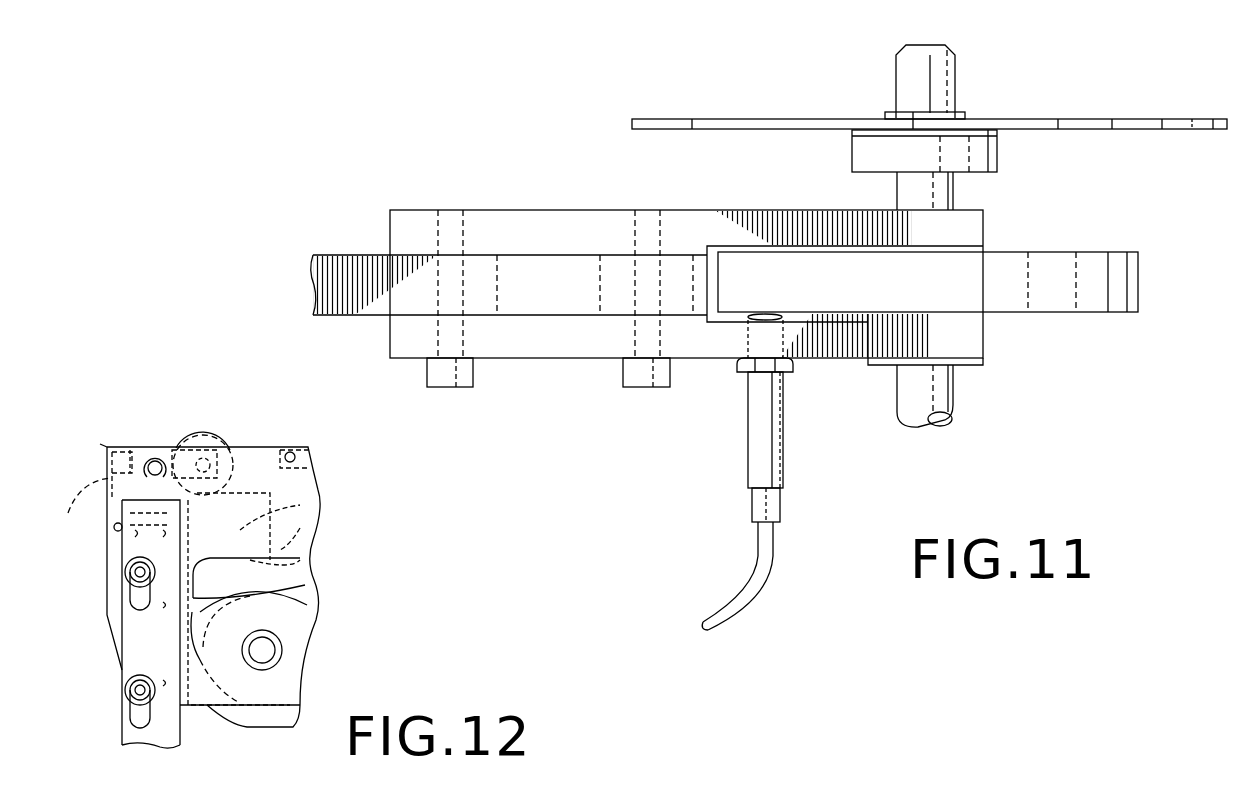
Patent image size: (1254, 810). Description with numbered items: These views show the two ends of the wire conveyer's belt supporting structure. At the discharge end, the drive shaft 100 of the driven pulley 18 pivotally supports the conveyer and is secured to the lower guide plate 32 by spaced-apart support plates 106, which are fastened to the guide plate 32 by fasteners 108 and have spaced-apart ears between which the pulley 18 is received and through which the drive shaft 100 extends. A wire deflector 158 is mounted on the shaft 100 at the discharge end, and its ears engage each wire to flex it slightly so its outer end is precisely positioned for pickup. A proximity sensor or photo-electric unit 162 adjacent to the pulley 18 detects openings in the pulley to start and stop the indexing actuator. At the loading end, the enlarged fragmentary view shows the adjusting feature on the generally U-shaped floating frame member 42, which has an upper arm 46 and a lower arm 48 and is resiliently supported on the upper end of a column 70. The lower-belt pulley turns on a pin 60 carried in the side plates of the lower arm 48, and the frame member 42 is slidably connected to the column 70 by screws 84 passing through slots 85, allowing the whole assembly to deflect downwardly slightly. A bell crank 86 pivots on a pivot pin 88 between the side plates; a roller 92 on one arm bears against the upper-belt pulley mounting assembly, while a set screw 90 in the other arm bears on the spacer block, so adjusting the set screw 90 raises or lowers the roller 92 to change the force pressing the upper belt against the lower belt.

In FIG. 11, the pulley 18 is at (1048, 257).
In FIG. 11, the first belt guide plate 32 is at (357, 270).
In FIG. 11, the support plates 106 is at (540, 232).
In FIG. 11, the fasteners 108 is at (449, 382).
In FIG. 11, the wire deflector 158 is at (748, 119).
In FIG. 11, the drive shaft 100 is at (945, 393).
In FIG. 11, the photo-electric unit 162 is at (778, 455).
In FIG. 12, the floating frame member 42 is at (100, 444).
In FIG. 12, the upper arm 46 is at (298, 480).
In FIG. 12, the lower arm 48 is at (293, 630).
In FIG. 12, the pin 60 is at (262, 658).
In FIG. 12, the column 70 is at (175, 732).
In FIG. 12, the screws 84 is at (125, 685).
In FIG. 12, the slots 85 is at (133, 722).
In FIG. 12, the bell crank 86 is at (130, 450).
In FIG. 12, the pivot pin 88 is at (157, 462).
In FIG. 12, the set screw 90 is at (79, 516).
In FIG. 12, the roller 92 is at (210, 440).